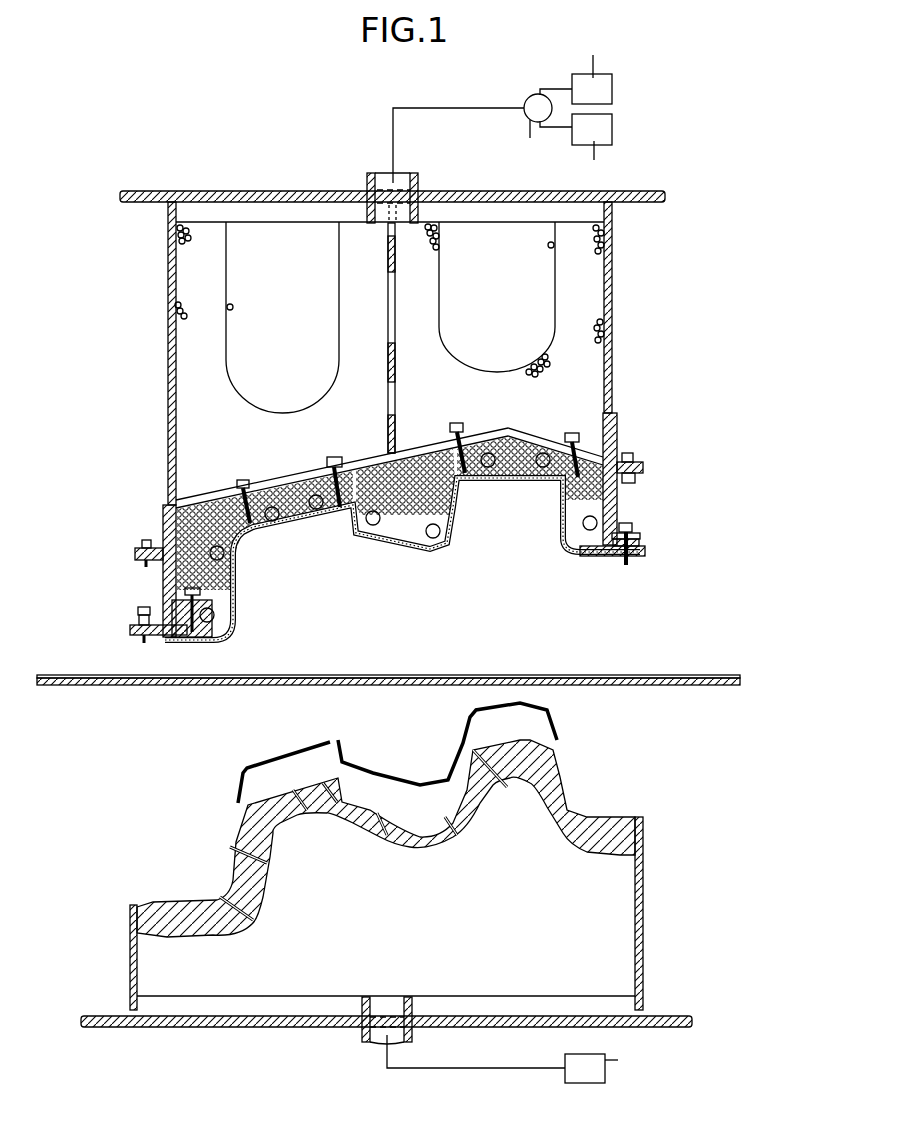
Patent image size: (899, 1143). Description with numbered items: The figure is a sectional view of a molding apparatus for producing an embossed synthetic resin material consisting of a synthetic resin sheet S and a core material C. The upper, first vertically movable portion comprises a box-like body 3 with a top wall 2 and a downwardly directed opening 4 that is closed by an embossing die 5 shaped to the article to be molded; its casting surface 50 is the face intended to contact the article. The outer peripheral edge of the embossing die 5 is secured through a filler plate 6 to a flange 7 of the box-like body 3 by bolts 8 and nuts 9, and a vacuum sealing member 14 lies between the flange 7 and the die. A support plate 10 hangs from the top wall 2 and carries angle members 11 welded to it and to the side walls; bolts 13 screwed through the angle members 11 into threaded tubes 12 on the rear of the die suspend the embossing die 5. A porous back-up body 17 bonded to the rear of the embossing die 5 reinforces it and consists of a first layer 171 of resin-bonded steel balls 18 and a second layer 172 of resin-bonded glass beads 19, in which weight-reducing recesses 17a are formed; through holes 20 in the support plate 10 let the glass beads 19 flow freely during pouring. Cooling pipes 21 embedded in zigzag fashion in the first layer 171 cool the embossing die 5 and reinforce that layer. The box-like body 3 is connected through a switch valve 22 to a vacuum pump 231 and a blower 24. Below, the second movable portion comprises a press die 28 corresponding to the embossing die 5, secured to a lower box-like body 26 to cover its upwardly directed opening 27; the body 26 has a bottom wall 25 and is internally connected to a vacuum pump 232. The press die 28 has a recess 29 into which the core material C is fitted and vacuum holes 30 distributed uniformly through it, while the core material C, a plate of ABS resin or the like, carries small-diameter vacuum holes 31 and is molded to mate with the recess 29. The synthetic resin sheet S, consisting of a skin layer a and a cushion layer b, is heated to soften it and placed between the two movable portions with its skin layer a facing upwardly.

The top wall 2 is at (251, 191).
The box-like body 3 is at (610, 343).
The downwardly directed opening 4 is at (628, 521).
The embossing die 5 is at (497, 483).
The filler plate 6 is at (640, 552).
The flange 7 is at (641, 538).
The bolts 8 is at (626, 566).
The nuts 9 is at (634, 529).
The support plate 10 is at (395, 375).
The angle members 11 is at (619, 276).
The threaded tubes 12 is at (662, 884).
The bolts 13 is at (242, 480).
The vacuum sealing member 14 is at (592, 555).
The porous back-up body 17 is at (582, 308).
The recesses 17a is at (227, 307).
The first layer 171 is at (585, 500).
The second layer 172 is at (588, 393).
The steel balls 18 is at (390, 538).
The glass beads 19 is at (358, 463).
The through holes 20 is at (395, 315).
The cooling pipes 21 is at (279, 513).
The switch valve 22 is at (529, 102).
The blower 24 is at (612, 130).
The bottom wall 25 is at (505, 1028).
The box-like body 26 is at (643, 917).
The upwardly directed opening 27 is at (637, 818).
The press die 28 is at (420, 843).
The recess 29 is at (378, 806).
The vacuum holes 30 is at (267, 863).
The vacuum holes 31 is at (247, 767).
The casting surface 50 is at (397, 546).
The vacuum pump 231 is at (612, 90).
The vacuum pump 232 is at (605, 1080).
The skin layer a is at (727, 675).
The cushion layer b is at (400, 692).
The synthetic resin sheet S is at (411, 679).
The core material C is at (558, 724).